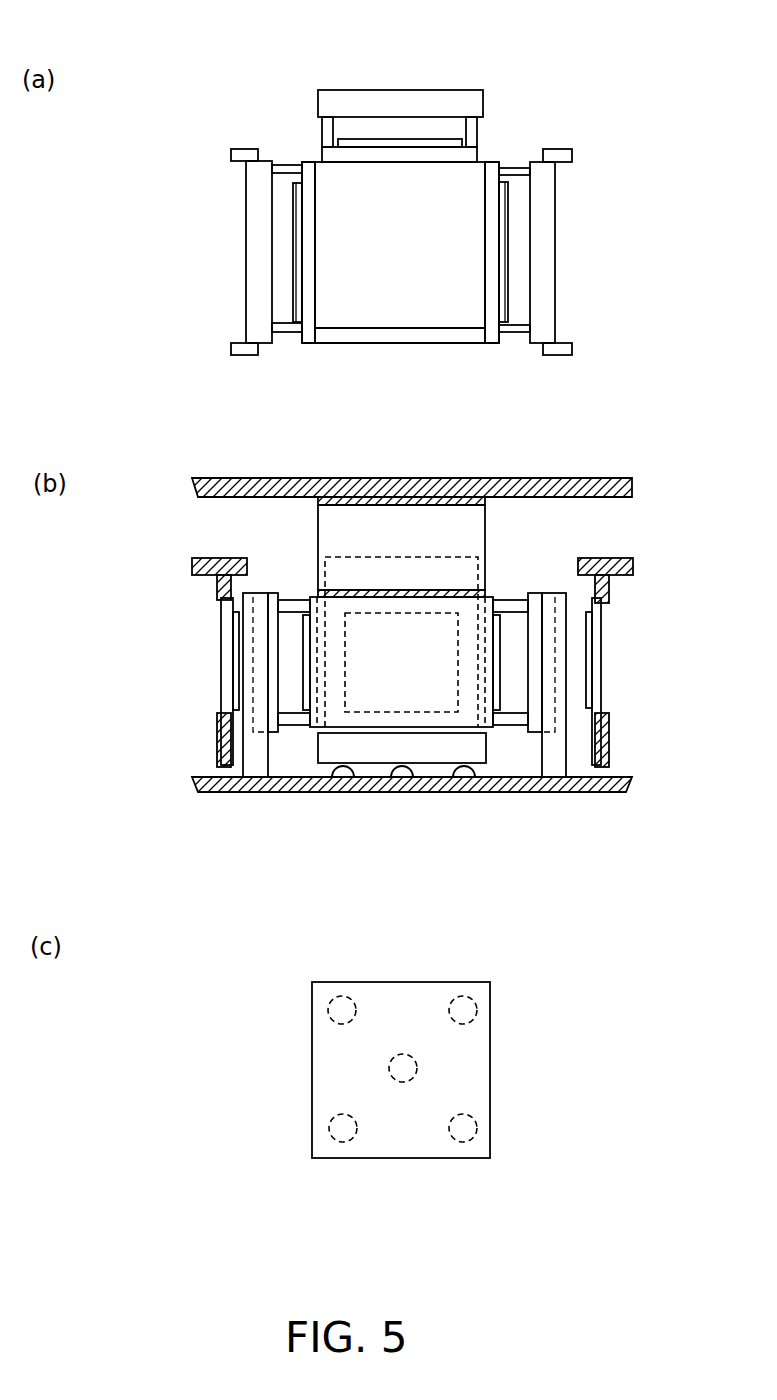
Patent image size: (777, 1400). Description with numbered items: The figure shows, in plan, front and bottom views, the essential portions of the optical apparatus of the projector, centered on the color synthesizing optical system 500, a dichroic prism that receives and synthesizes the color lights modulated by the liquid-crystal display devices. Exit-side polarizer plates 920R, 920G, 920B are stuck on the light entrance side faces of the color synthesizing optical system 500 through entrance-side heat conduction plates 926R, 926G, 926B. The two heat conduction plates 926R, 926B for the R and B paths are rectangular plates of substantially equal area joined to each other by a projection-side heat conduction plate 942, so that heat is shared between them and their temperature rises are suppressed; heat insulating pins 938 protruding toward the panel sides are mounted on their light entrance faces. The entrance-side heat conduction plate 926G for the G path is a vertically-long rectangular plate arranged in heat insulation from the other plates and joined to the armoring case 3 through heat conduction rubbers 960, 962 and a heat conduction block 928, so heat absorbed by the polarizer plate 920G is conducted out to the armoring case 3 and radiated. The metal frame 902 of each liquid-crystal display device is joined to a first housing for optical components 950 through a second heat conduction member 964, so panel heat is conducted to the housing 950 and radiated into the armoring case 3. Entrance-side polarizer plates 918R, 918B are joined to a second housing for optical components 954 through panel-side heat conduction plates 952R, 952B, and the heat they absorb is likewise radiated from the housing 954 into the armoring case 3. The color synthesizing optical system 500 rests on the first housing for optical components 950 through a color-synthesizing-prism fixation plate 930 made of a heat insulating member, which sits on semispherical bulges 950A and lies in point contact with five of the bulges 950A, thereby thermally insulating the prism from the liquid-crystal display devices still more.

The armoring case 3 is at (330, 488).
The color synthesizing optical system 500 is at (468, 180).
The metal frame 902 is at (398, 97).
The entrance-side polarizer plate 918R is at (236, 688).
The entrance-side polarizer plate 918B is at (590, 634).
The exit-side polarizer plate 920R is at (310, 170).
The exit-side polarizer plate 920G is at (420, 142).
The exit-side polarizer plate 920B is at (507, 290).
The entrance-side heat conduction plate 926R is at (297, 252).
The entrance-side heat conduction plate 926G is at (378, 152).
The entrance-side heat conduction plate 926B is at (490, 341).
The heat conduction block 928 is at (476, 536).
The color-synthesizing-prism fixation plate 930 is at (308, 760).
The heat insulating pins 938 is at (478, 128).
The projection-side heat conduction plate 942 is at (387, 345).
The first housing for optical components 950 is at (213, 792).
The semispherical bulges 950A is at (342, 770).
The panel-side heat conduction plate 952R is at (228, 625).
The panel-side heat conduction plate 952B is at (603, 688).
The second housing for optical components 954 is at (212, 558).
The heat conduction rubber 960 is at (372, 587).
The heat conduction rubber 962 is at (427, 478).
The second heat conduction member 964 is at (240, 148).